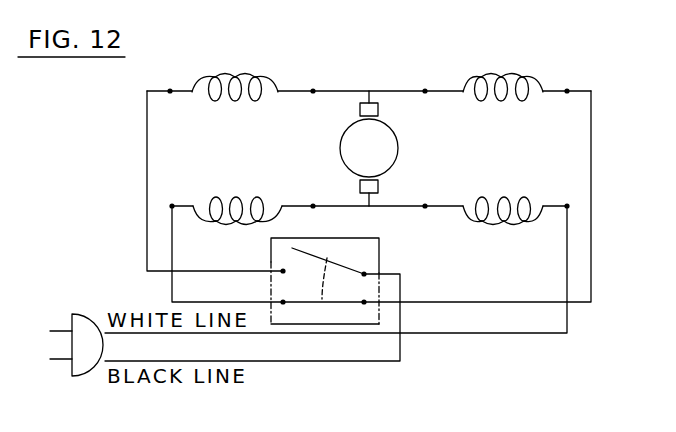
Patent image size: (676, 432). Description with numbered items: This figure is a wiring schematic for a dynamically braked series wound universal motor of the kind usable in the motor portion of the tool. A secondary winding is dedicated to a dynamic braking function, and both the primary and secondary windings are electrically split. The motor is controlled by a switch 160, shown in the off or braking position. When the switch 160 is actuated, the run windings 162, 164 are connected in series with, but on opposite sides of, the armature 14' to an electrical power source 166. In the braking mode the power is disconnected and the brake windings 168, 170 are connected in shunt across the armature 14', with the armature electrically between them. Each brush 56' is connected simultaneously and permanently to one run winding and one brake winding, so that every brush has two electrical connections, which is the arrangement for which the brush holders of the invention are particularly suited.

The run winding 162 is at (268, 78).
The brake winding 170 is at (471, 78).
The brake winding 168 is at (258, 198).
The run winding 164 is at (513, 224).
The armature 14' is at (337, 148).
The brush 56' is at (407, 148).
The switch 160 is at (380, 259).
The electrical power source 166 is at (71, 318).